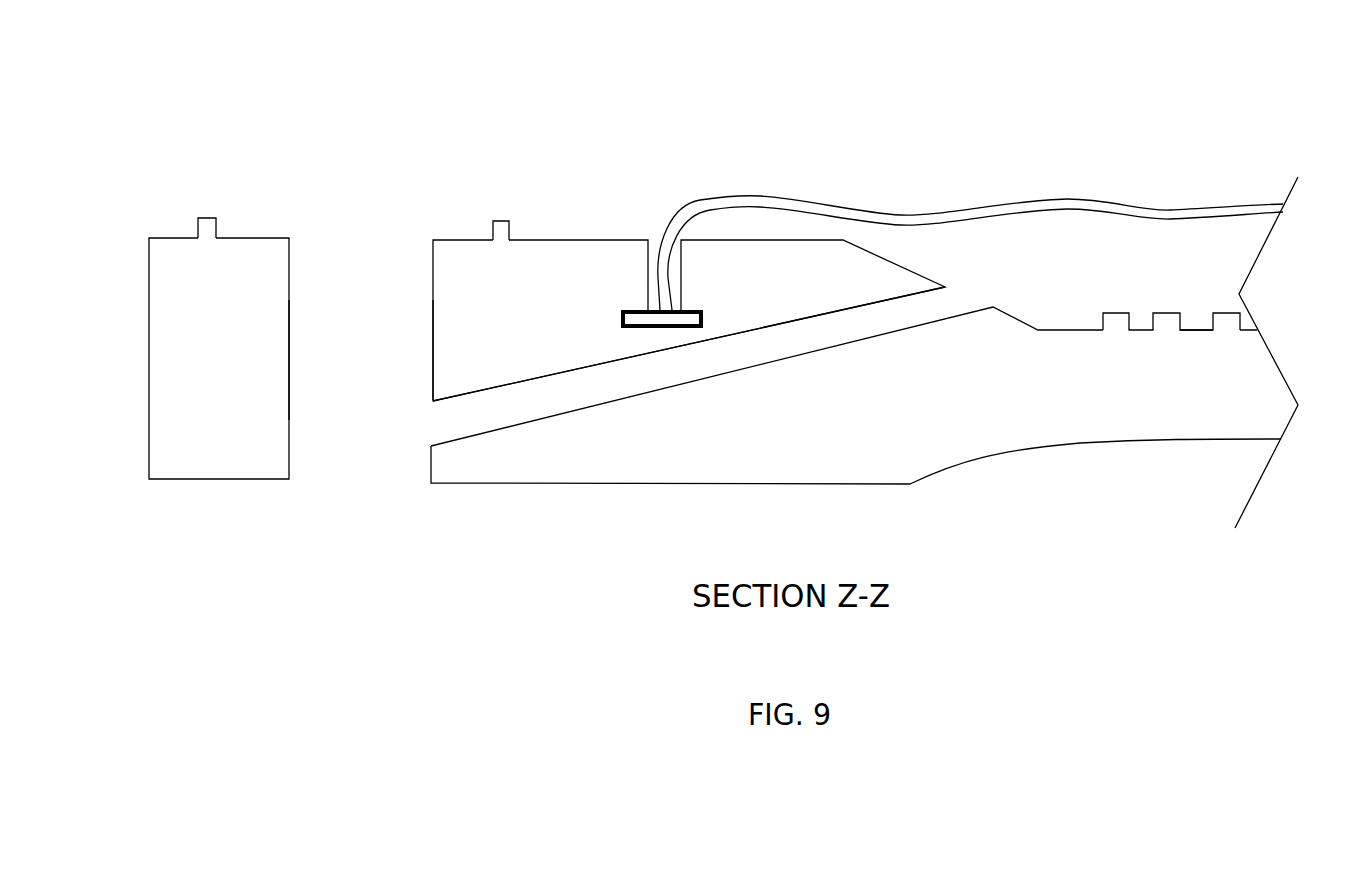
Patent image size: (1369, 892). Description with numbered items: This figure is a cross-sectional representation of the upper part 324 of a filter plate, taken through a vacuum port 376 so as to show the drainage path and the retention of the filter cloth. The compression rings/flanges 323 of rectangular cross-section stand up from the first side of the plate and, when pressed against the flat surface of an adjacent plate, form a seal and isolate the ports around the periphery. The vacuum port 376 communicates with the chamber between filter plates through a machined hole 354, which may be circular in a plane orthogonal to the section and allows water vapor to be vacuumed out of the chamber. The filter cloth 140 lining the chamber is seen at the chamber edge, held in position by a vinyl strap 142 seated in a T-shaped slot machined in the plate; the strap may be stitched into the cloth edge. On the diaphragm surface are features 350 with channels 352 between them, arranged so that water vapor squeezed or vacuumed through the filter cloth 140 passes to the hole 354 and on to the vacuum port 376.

The filter cloth 140 is at (974, 212).
The vinyl strap 142 is at (638, 316).
The compression rings/flanges 323 is at (207, 223).
The upper part 324 is at (727, 258).
The features 350 is at (1168, 323).
The channels 352 is at (1197, 322).
The machined hole 354 is at (557, 395).
The vacuum port 376 is at (353, 421).